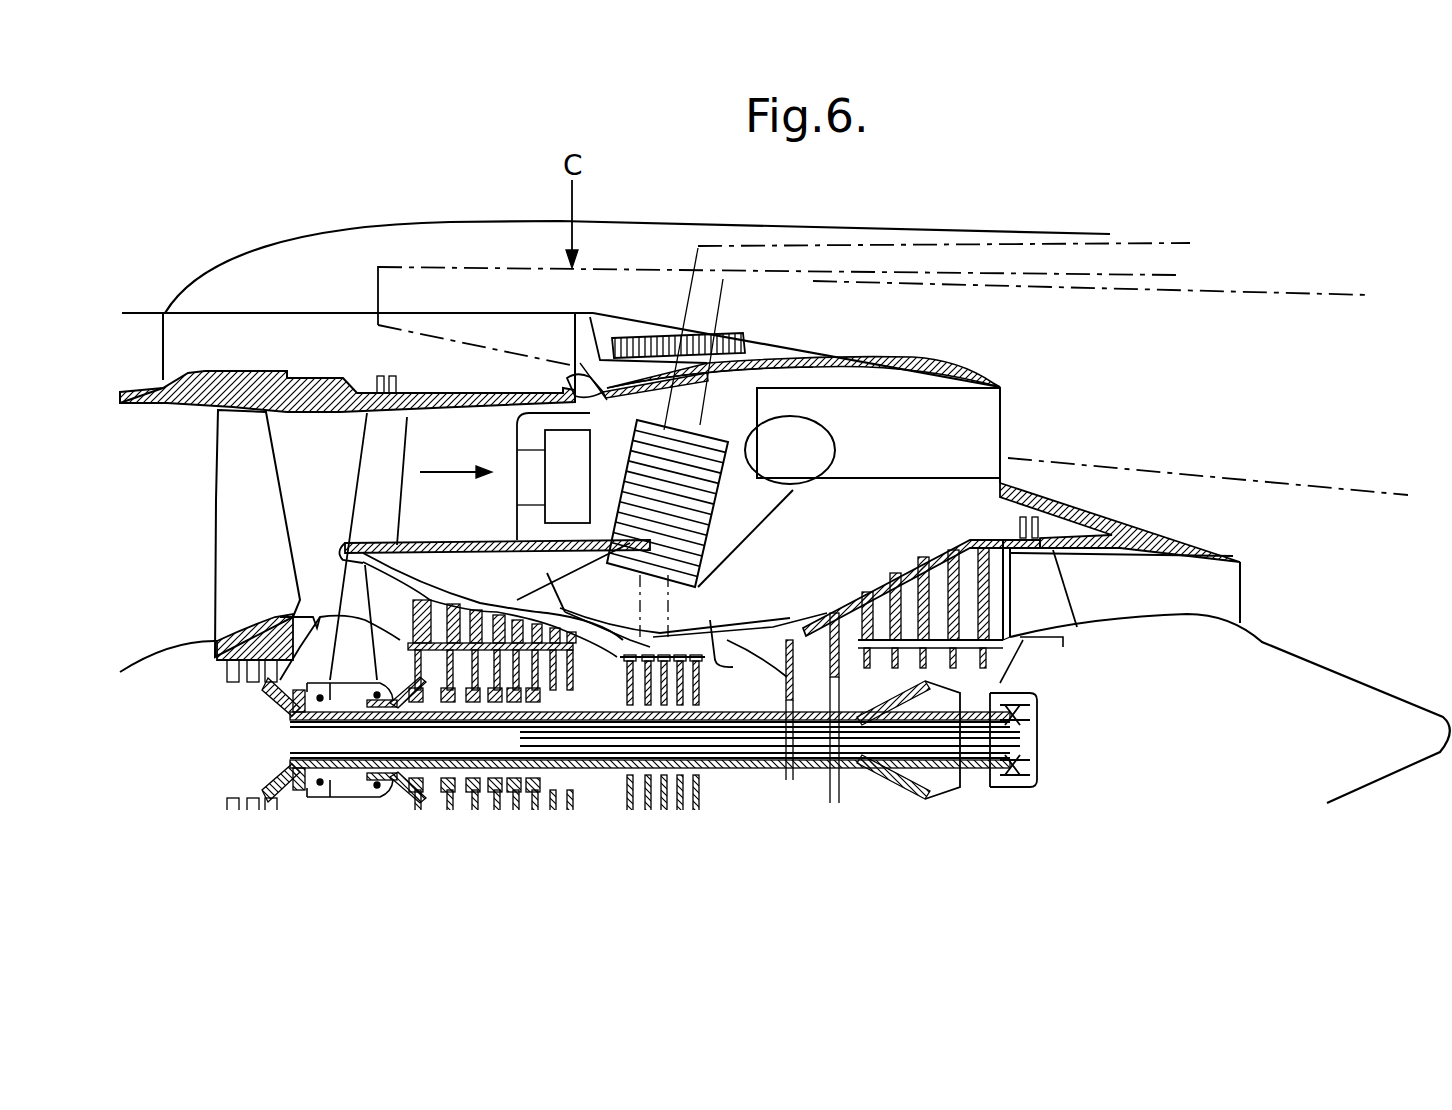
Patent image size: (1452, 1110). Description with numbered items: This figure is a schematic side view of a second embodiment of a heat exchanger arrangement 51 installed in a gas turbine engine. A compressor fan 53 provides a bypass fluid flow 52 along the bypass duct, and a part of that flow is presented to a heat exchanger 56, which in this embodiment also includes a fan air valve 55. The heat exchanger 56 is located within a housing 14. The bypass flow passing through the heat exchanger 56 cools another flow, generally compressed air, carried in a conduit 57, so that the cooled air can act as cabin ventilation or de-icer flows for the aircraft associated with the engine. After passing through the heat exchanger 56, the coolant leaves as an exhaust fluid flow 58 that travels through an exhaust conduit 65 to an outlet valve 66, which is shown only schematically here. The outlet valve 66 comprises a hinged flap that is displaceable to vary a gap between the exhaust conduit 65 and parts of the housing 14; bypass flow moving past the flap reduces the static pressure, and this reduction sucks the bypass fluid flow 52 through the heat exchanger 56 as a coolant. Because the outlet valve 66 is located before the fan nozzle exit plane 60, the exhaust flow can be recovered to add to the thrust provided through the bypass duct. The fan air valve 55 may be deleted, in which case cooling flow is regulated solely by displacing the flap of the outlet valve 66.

The housing 14 is at (525, 427).
The heat exchanger arrangement 51 is at (640, 415).
The bypass fluid flow 52 is at (454, 470).
The compressor fan 53 is at (250, 420).
The fan air valve 55 is at (560, 487).
The heat exchanger 56 is at (630, 570).
The conduit 57 is at (885, 257).
The exhaust fluid flow 58 is at (745, 495).
The fan nozzle exit plane 60 is at (1004, 384).
The exhaust conduit 65 is at (736, 437).
The outlet valve 66 is at (912, 400).